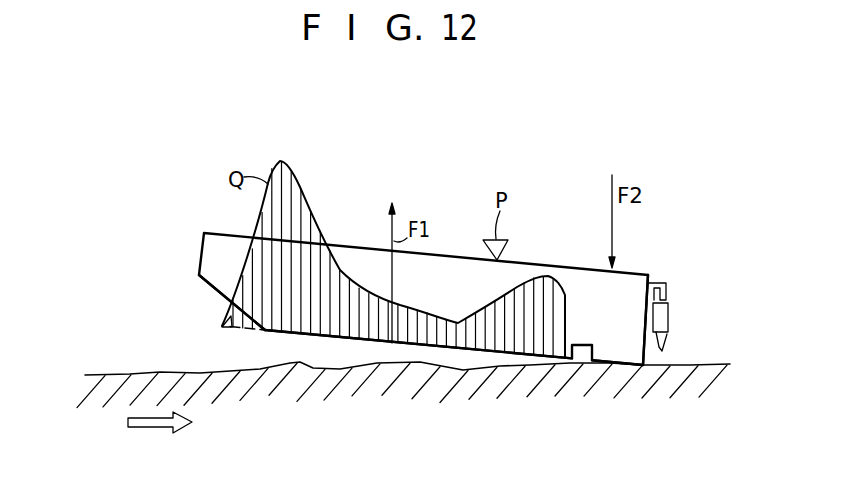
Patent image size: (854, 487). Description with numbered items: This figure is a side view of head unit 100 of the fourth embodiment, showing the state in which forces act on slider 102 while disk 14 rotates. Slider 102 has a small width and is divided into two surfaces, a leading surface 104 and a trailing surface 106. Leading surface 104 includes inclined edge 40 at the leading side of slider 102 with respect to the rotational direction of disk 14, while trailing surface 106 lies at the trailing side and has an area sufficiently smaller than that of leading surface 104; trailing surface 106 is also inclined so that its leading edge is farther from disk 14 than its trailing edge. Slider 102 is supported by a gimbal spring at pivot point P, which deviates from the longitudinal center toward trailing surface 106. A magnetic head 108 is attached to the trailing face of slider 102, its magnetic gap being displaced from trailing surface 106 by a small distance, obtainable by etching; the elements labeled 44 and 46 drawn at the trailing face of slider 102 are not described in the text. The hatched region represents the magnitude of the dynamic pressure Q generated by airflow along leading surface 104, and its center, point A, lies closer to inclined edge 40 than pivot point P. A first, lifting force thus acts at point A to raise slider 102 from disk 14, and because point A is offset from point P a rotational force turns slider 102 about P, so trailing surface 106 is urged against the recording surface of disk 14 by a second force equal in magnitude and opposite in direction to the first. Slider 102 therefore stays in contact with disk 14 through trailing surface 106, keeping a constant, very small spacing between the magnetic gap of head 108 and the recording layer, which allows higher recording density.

The disk 14 is at (403, 402).
The inclined edge 40 is at (208, 284).
The bracket 44 is at (665, 283).
The sensor unit 46 is at (669, 317).
The head unit 100 is at (408, 298).
The slider 102 is at (352, 258).
The leading surface 104 is at (345, 338).
The trailing surface 106 is at (643, 367).
The magnetic head 108 is at (696, 295).